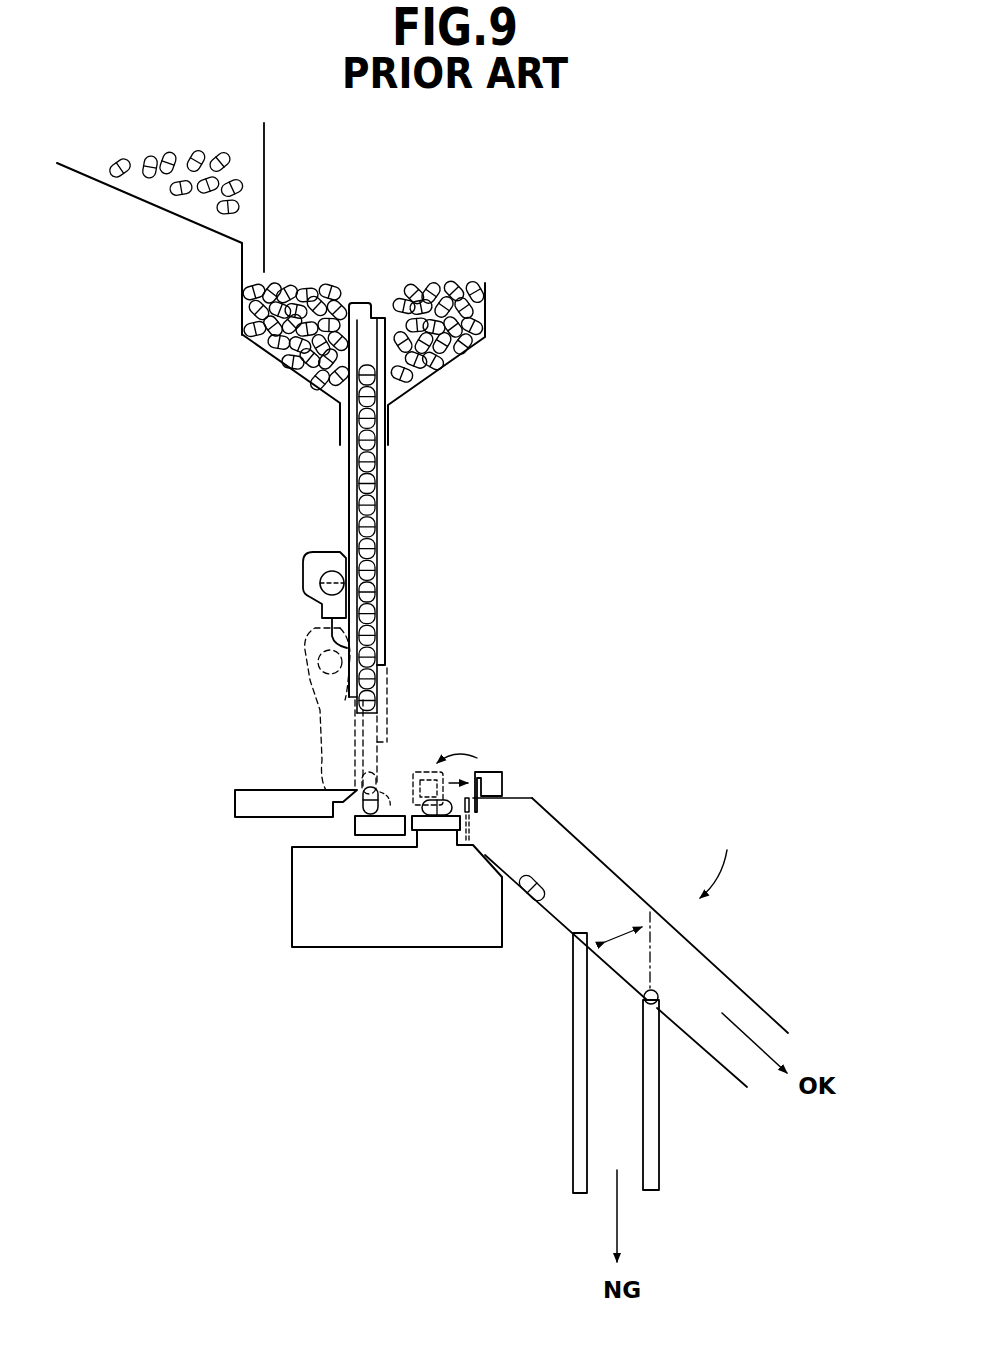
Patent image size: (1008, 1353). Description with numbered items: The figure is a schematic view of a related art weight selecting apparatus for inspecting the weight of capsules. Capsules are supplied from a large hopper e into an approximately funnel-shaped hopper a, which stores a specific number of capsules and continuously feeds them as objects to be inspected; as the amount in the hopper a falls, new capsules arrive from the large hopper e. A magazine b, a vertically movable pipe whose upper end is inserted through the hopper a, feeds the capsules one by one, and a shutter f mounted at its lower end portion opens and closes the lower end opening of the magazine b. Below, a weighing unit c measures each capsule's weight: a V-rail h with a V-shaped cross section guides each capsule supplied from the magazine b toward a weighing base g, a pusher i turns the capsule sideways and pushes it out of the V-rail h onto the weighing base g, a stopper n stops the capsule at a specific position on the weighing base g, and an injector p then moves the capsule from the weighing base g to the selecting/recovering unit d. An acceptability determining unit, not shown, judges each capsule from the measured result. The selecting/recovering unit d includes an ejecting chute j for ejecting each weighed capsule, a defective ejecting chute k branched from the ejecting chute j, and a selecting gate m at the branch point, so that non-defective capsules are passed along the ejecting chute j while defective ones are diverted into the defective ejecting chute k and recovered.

The hopper a is at (485, 340).
The magazine b is at (386, 521).
The weighing unit c is at (362, 917).
The selecting/recovering unit d is at (722, 861).
The large hopper e is at (266, 163).
The shutter f is at (322, 608).
The weighing base g is at (440, 830).
The V-rail h is at (368, 836).
The pusher i is at (265, 808).
The ejecting chute j is at (612, 870).
The defective ejecting chute k is at (573, 1082).
The selecting gate m is at (612, 965).
The stopper n is at (493, 813).
The injector p is at (490, 780).